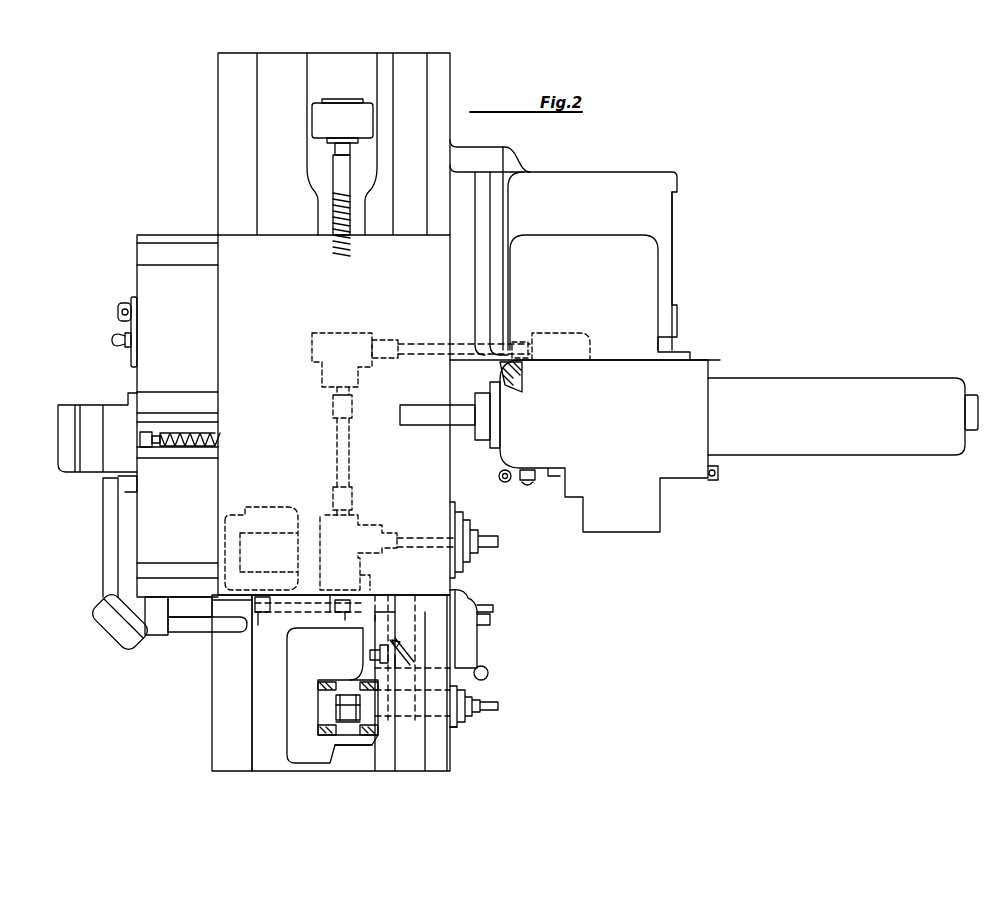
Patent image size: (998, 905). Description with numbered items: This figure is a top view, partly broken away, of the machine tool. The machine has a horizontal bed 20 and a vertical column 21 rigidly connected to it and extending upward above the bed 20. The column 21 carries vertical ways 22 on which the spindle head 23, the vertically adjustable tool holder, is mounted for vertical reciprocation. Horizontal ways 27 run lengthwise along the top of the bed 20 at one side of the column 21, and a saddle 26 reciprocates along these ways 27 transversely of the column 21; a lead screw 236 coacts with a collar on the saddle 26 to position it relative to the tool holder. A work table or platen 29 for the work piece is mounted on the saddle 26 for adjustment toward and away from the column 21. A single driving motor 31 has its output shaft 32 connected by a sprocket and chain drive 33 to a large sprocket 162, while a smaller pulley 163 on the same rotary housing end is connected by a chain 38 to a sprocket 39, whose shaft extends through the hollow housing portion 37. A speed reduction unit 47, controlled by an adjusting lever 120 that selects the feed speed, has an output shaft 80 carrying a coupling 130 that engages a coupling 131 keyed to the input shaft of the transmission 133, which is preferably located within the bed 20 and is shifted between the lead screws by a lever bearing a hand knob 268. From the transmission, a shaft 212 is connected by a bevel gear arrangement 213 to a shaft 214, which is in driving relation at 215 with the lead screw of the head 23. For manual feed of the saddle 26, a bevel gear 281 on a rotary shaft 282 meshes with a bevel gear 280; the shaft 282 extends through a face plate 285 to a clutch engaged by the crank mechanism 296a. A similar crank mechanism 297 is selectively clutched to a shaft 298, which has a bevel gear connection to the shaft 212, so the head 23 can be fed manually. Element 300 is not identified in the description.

The horizontal bed 20 is at (334, 70).
The lead screw 236 is at (348, 200).
The work table or platen 29 is at (238, 251).
The saddle 26 is at (158, 283).
The vertical column 21 is at (662, 226).
The vertical ways 22 is at (520, 358).
The driving relation 215 is at (575, 336).
The spindle head 23 is at (720, 378).
The shaft 214 is at (420, 345).
The bevel gear arrangement 213 is at (333, 363).
The shaft 212 is at (348, 457).
The driving motor 31 is at (284, 520).
The shaft 298 is at (408, 540).
The crank mechanism 297 is at (484, 546).
The large sprocket 162 is at (330, 600).
The smaller pulley 163 is at (341, 597).
The chain 38 is at (378, 603).
The sprocket 39 is at (405, 598).
The speed reduction unit 47 is at (488, 602).
The hollow housing portion 37 is at (352, 657).
The adjusting lever 120 is at (492, 619).
The sprocket and chain drive 33 is at (286, 606).
The output shaft 32 is at (262, 618).
The carrier block 300 is at (315, 620).
The coupling 131 is at (385, 642).
The coupling 130 is at (402, 648).
The hand knob 268 is at (488, 674).
The output shaft 80 is at (396, 657).
The crank mechanism 296a is at (488, 702).
The transmission 133 is at (272, 702).
The bevel gear 280 is at (332, 702).
The bevel gear 281 is at (332, 717).
The face plate 285 is at (475, 720).
The horizontal ways 27 is at (226, 752).
The rotary shaft 282 is at (376, 756).